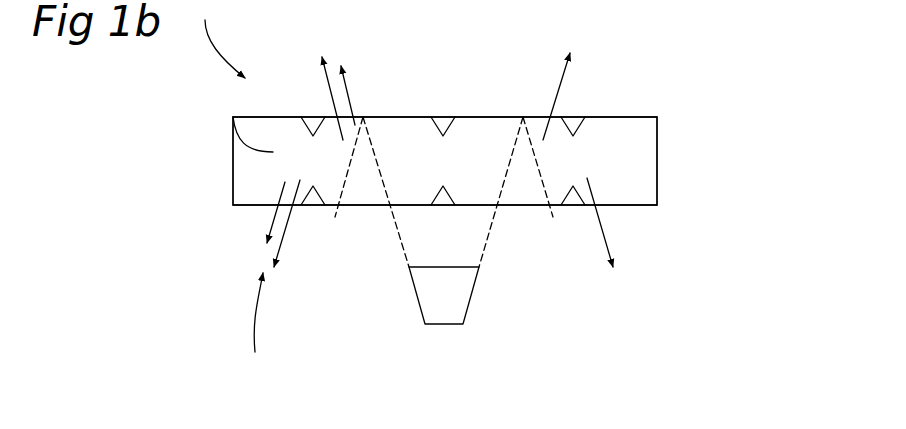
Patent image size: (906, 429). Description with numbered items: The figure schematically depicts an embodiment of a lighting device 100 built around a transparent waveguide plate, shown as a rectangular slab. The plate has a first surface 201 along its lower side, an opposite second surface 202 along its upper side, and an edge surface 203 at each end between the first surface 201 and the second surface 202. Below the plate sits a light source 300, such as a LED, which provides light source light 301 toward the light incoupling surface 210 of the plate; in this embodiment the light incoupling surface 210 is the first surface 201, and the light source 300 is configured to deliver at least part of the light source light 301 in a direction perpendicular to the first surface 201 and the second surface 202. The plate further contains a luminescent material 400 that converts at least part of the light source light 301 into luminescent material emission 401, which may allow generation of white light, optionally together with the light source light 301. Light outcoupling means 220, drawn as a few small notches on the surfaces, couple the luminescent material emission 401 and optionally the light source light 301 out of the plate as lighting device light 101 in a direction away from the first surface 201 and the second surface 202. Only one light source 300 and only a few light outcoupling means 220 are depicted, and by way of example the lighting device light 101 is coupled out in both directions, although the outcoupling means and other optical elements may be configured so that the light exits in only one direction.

The lighting device 100 is at (667, 108).
The lighting device light 101 is at (232, 189).
The first surface 201 is at (575, 207).
The second surface 202 is at (483, 117).
The edge surface 203 is at (232, 152).
The light incoupling surface 210 is at (418, 206).
The light outcoupling means 220 is at (440, 117).
The light source 300 is at (448, 335).
The light source light 301 is at (343, 90).
The luminescent material 400 is at (233, 117).
The luminescent material emission 401 is at (325, 76).